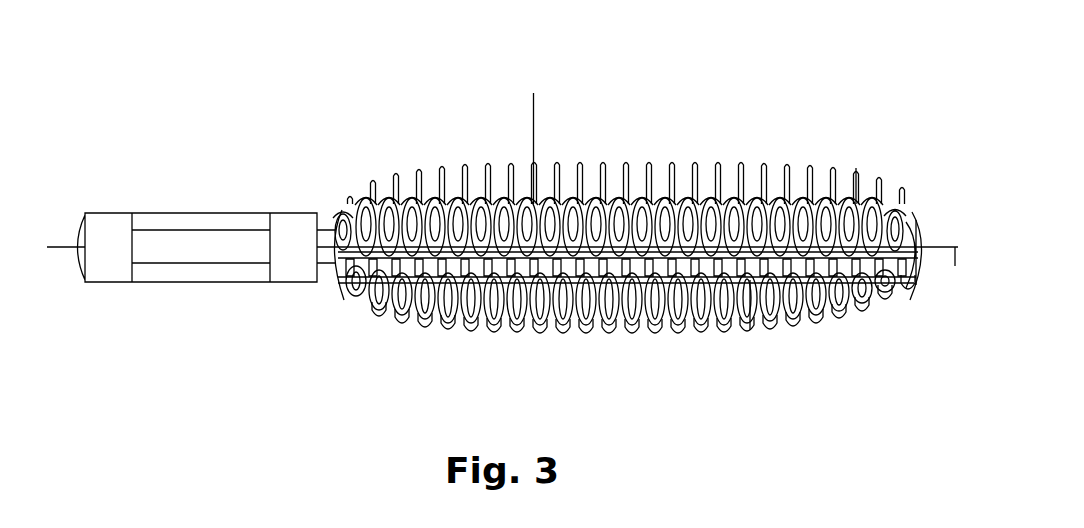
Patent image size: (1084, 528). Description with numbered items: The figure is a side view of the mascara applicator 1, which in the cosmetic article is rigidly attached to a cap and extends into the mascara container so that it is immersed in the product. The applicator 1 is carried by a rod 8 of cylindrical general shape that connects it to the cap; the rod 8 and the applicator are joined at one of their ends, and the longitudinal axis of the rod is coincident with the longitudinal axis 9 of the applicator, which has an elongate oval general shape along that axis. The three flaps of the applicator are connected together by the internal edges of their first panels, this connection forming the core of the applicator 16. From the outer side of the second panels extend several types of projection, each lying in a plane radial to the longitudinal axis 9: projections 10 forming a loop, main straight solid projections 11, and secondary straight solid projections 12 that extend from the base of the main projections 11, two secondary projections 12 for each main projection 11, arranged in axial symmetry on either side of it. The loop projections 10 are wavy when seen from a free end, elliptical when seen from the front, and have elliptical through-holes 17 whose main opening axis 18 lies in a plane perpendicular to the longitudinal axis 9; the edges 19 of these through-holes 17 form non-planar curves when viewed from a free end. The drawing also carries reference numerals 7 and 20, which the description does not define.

The mascara applicator 1 is at (733, 67).
The expandable basket assembly 7 is at (923, 288).
The rod 8 is at (203, 217).
The longitudinal axis 9 is at (47, 246).
The projections forming a loop 10 is at (638, 166).
The main straight solid projections 11 is at (698, 168).
The secondary straight solid projections 12 is at (600, 322).
The core of the applicator 16 is at (924, 233).
The through-holes 17 is at (857, 170).
The main opening axis 18 is at (520, 325).
The edges of the through-holes 19 is at (856, 322).
The longitudinal strut 20 is at (533, 152).